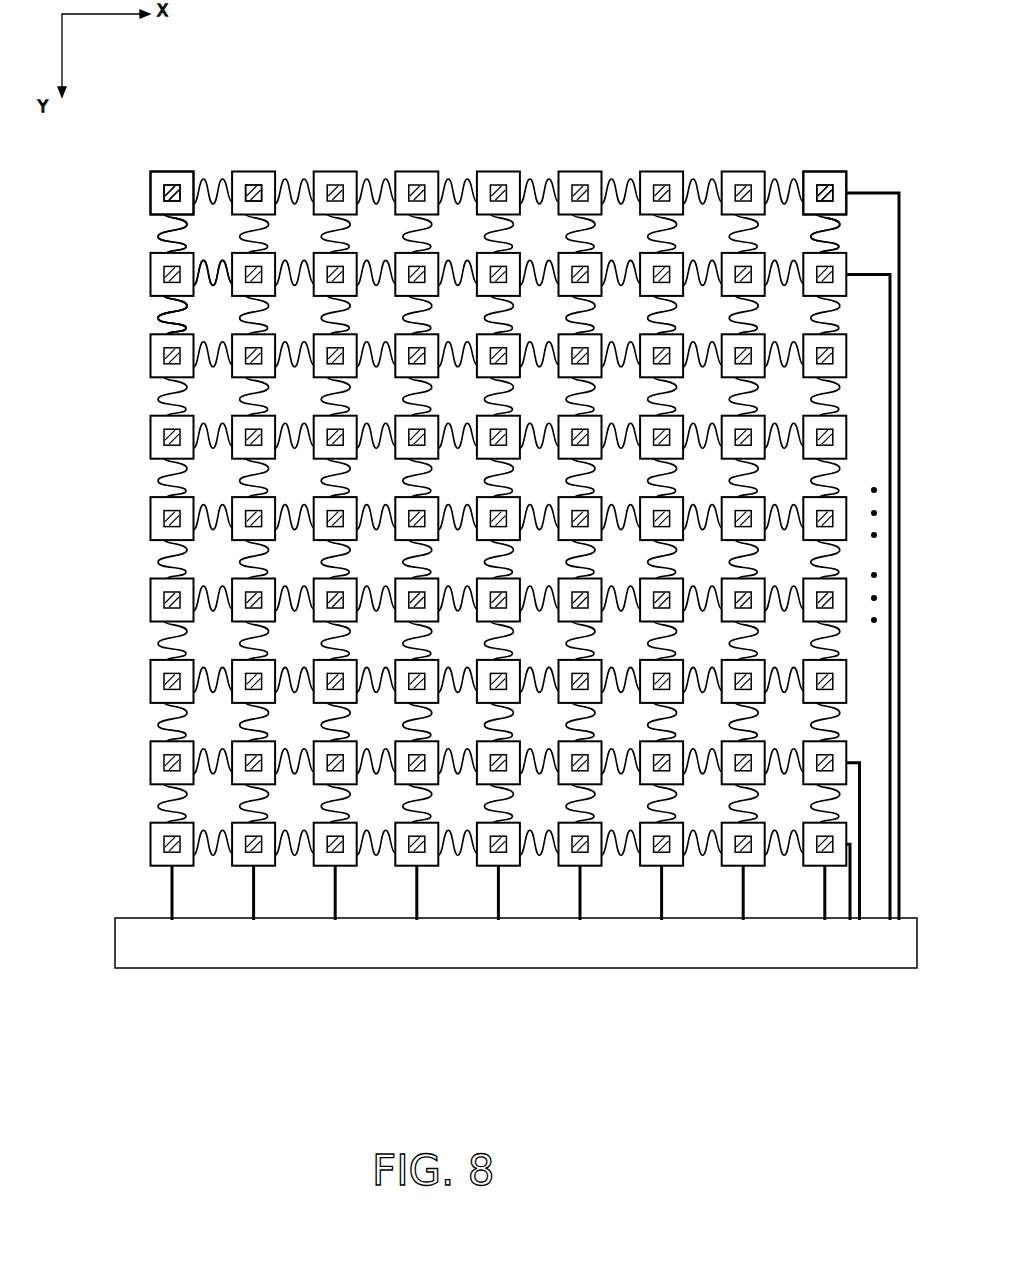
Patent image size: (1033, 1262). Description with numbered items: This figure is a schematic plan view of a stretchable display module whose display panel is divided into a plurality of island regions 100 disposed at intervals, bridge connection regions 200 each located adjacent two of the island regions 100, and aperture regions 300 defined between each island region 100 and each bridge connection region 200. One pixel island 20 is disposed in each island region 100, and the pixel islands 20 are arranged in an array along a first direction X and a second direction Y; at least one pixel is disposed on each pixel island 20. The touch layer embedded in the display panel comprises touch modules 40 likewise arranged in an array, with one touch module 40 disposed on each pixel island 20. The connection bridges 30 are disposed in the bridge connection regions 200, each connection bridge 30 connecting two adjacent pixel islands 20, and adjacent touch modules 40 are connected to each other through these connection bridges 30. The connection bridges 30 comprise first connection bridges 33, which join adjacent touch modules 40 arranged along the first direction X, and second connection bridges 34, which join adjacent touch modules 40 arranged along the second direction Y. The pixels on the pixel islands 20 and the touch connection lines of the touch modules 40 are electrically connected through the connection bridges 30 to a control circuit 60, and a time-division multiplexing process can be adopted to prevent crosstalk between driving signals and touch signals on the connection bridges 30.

The pixel island 20 is at (168, 177).
The touch module 40 is at (250, 192).
The connection bridge 30 is at (78, 220).
The first connection bridge 33 is at (192, 264).
The second connection bridge 34 is at (143, 317).
The island region 100 is at (825, 163).
The bridge connection region 200 is at (850, 238).
The aperture region 300 is at (780, 230).
The control circuit 60 is at (660, 943).